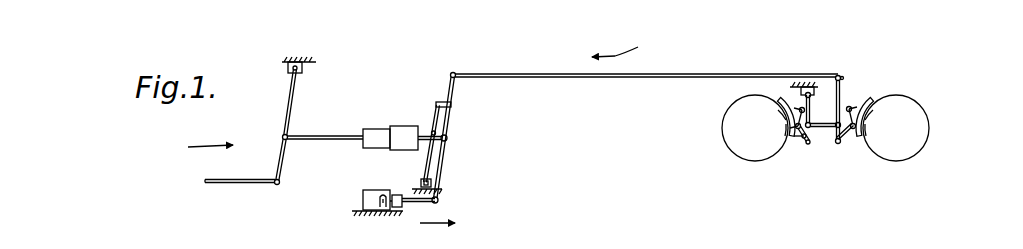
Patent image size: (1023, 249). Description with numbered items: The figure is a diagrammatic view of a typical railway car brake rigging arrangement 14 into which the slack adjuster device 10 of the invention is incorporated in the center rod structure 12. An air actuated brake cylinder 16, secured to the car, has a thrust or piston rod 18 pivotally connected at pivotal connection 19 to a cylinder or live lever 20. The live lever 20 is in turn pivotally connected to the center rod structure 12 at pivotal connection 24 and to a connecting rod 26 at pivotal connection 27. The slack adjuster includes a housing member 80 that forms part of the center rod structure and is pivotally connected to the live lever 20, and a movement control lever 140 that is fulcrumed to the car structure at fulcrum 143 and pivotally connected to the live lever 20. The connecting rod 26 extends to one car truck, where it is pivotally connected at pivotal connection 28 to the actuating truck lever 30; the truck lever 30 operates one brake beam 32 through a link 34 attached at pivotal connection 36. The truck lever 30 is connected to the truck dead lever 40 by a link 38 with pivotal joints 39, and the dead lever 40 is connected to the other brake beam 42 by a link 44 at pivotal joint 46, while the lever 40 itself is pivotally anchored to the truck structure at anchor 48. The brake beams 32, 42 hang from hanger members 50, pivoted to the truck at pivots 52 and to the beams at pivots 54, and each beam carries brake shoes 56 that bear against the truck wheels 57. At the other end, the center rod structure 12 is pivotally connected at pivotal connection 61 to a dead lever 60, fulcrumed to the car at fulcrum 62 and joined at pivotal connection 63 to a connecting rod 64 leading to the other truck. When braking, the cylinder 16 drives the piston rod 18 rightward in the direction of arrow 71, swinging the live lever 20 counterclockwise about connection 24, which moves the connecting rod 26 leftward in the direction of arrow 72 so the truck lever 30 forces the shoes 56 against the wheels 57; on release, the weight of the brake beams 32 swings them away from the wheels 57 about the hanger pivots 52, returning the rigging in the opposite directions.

The slack adjuster device 10 is at (391, 117).
The center rod structure 12 is at (339, 143).
The brake rigging arrangement 14 is at (195, 148).
The brake cylinder 16 is at (371, 205).
The thrust or piston rod 18 is at (418, 203).
The pivotal connection 19 is at (440, 199).
The cylinder or live lever 20 is at (448, 157).
The pivotal connection 24 is at (449, 137).
The connecting rod 26 is at (517, 73).
The pivotal connection 27 is at (460, 70).
The pivotal connection 28 is at (842, 77).
The actuating truck lever 30 is at (852, 106).
The brake beam 32 is at (845, 143).
The link 34 is at (842, 146).
The pivotal connection 36 is at (818, 130).
The link 38 is at (802, 137).
The pivotal joints 39 is at (837, 75).
The truck dead lever 40 is at (829, 105).
The brake beam 42 is at (790, 153).
The link 44 is at (795, 148).
The pivotal joint 46 is at (797, 143).
The pivotal anchor 48 is at (802, 90).
The hanger members 50 is at (793, 112).
The hanger pivot to truck 52 is at (799, 106).
The hanger pivot to brake beam 54 is at (783, 119).
The brake shoes 56 is at (784, 140).
The truck wheels 57 is at (733, 130).
The dead lever 60 is at (290, 97).
The pivotal connection 61 is at (288, 135).
The fulcrum 62 is at (303, 61).
The pivotal connection 63 is at (279, 186).
The connecting rod 64 is at (237, 185).
The direction arrow 71 is at (428, 224).
The arrow 72 is at (628, 45).
The housing member 80 is at (303, 143).
The movement control lever 140 is at (450, 120).
The fulcrum 143 is at (420, 181).